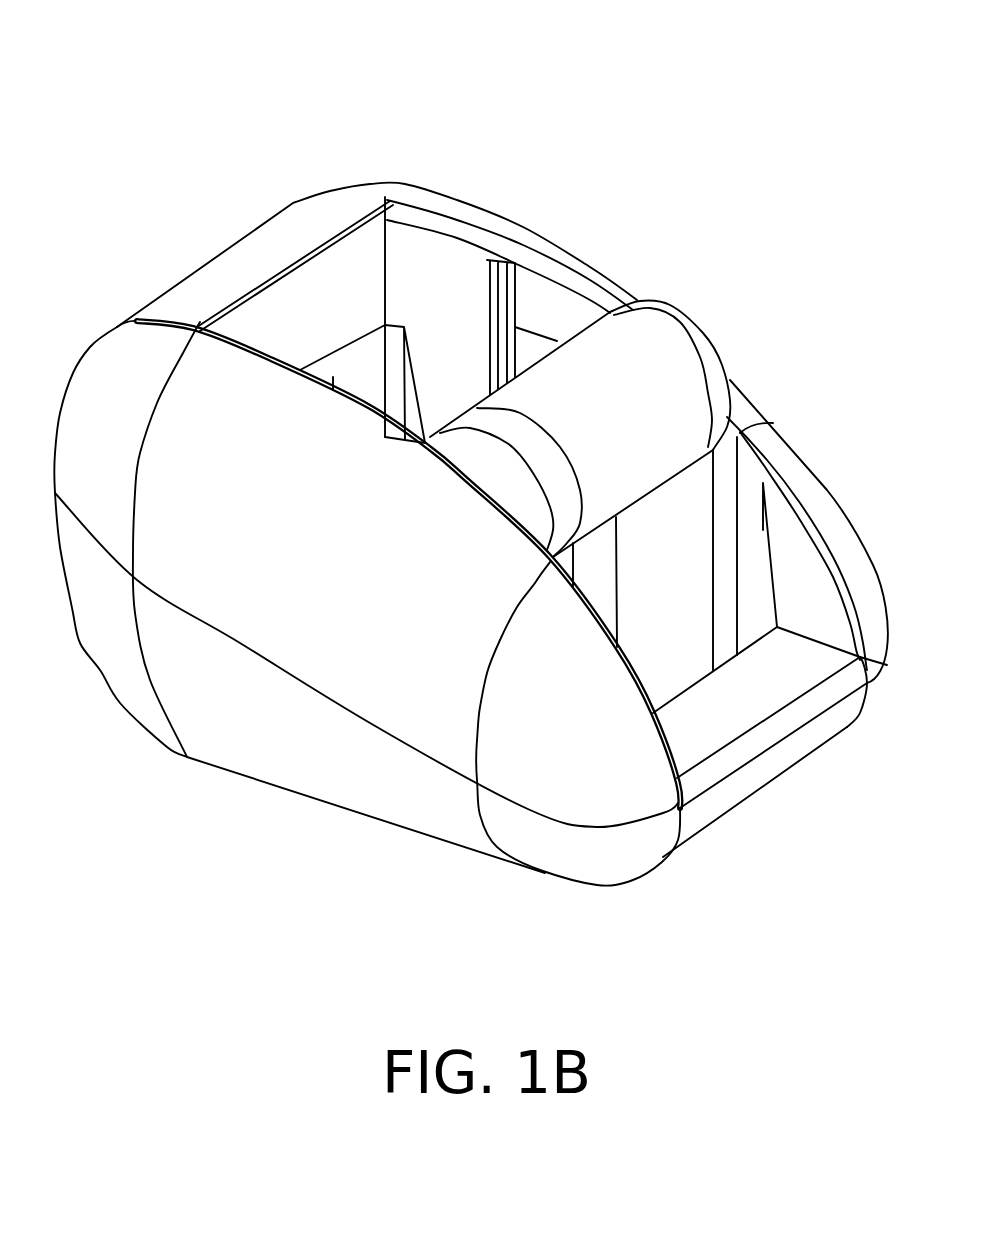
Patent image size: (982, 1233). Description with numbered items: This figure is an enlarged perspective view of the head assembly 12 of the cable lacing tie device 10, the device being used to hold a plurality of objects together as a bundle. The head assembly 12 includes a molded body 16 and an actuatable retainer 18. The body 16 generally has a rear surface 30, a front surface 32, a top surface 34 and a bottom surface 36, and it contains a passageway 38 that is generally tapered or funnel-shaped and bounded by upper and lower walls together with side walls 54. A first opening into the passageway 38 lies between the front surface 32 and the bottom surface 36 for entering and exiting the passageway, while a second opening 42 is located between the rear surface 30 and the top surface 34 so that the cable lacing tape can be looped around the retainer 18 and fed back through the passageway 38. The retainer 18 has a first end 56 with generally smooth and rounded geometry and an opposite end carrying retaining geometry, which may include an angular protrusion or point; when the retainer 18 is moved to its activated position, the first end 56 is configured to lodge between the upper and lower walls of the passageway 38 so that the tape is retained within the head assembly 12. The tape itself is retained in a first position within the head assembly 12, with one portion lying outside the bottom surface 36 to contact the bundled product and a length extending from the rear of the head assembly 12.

The cable lacing tie device 10 is at (445, 147).
The head assembly 12 is at (187, 760).
The molded body 16 is at (388, 663).
The actuatable retainer 18 is at (615, 397).
The rear surface 30 is at (773, 762).
The front surface 32 is at (77, 363).
The top surface 34 is at (295, 227).
The bottom surface 36 is at (477, 855).
The passageway 38 is at (358, 388).
The second opening 42 is at (690, 483).
The side walls 54 is at (460, 340).
The first end 56 is at (700, 350).